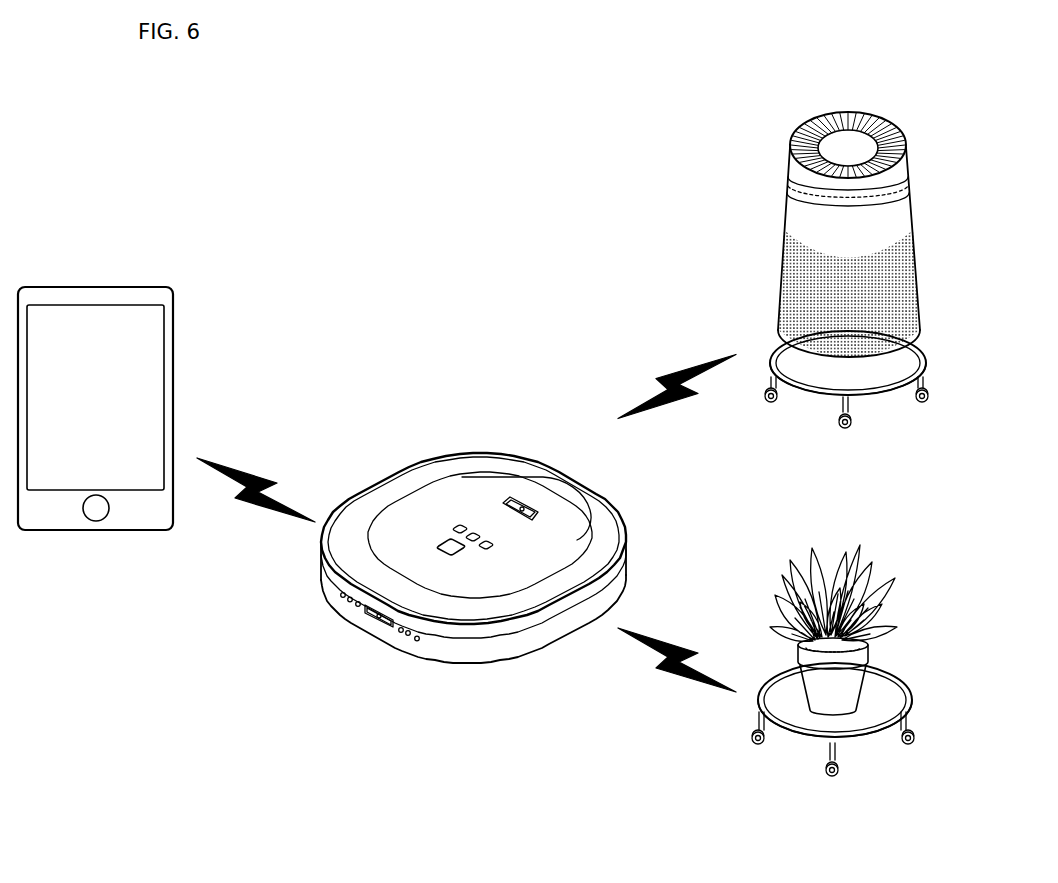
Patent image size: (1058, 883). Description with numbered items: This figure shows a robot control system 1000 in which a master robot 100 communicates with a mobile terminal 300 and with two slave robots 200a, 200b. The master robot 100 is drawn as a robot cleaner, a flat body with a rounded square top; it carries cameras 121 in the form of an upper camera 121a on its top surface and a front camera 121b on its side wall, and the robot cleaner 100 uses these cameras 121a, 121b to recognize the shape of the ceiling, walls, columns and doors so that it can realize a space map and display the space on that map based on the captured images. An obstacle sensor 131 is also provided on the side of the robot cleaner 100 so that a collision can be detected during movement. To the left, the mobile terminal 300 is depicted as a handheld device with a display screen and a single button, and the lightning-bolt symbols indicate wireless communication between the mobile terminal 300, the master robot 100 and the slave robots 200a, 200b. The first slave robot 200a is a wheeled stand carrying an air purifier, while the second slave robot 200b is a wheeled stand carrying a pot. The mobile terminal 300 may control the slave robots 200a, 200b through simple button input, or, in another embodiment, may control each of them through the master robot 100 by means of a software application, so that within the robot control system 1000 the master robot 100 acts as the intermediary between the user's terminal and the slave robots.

The robot control system 1000 is at (100, 760).
The mobile terminal 300 is at (133, 287).
The master robot 100 is at (390, 432).
The cameras 121 is at (477, 575).
The upper camera 121a is at (540, 512).
The front camera 121b is at (377, 628).
The obstacle sensor 131 is at (417, 641).
The first slave robot 200a is at (733, 252).
The second slave robot 200b is at (751, 784).